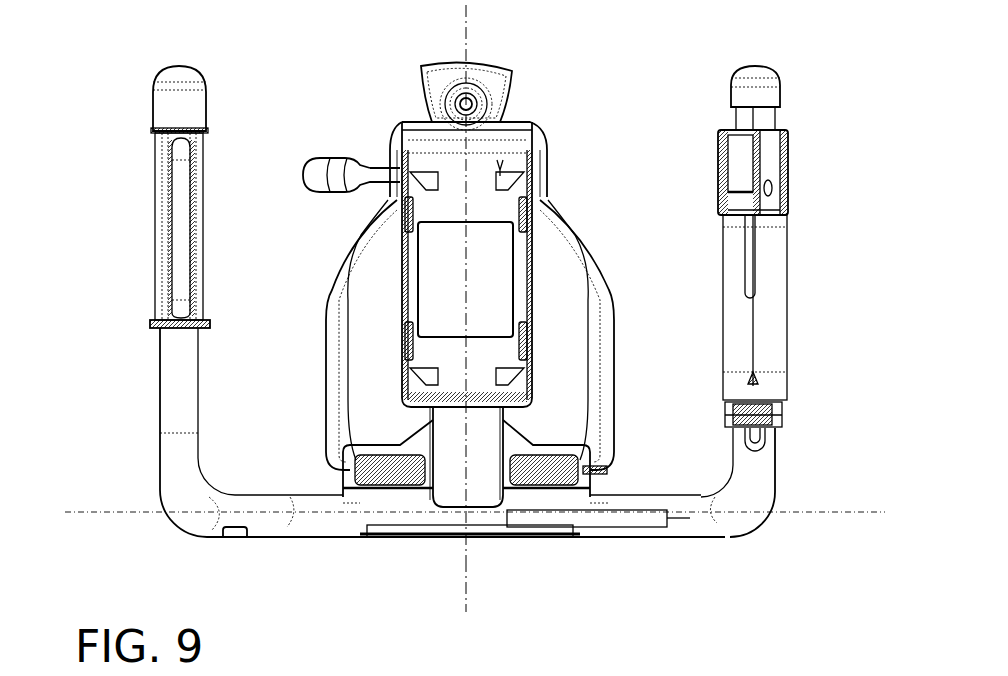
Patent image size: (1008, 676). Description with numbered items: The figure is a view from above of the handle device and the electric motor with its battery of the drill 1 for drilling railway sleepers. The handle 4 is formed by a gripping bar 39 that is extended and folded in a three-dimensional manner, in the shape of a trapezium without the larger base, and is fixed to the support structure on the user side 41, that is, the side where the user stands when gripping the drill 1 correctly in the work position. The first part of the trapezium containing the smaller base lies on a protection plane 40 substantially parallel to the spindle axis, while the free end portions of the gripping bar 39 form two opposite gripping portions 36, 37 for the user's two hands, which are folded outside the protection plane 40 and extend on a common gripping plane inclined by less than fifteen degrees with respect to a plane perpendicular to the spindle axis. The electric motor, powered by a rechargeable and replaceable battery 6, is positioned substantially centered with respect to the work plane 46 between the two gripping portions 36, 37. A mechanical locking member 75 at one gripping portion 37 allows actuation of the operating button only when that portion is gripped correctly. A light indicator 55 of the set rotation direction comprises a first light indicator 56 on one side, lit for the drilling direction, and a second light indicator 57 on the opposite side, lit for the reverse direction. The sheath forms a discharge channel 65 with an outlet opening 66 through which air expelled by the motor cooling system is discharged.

The drill 1 is at (593, 183).
The handle 4 is at (160, 374).
The battery 6 is at (462, 283).
The gripping portion 36 is at (180, 233).
The gripping portion 37 is at (772, 308).
The gripping bar 39 is at (755, 482).
The protection plane 40 is at (72, 511).
The user side 41 is at (485, 649).
The work plane 46 is at (468, 30).
The light indicator 55 is at (570, 436).
The first light indicator 56 is at (600, 468).
The second light indicator 57 is at (362, 498).
The discharge channel 65 is at (488, 470).
The outlet opening 66 is at (440, 510).
The mechanical locking member 75 is at (752, 250).